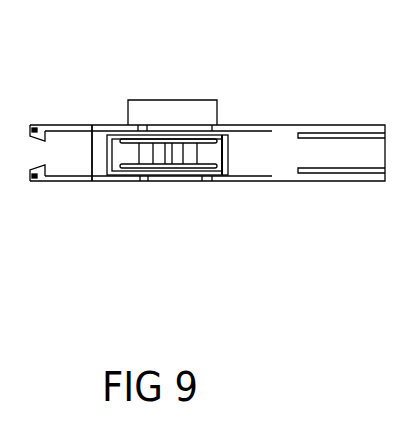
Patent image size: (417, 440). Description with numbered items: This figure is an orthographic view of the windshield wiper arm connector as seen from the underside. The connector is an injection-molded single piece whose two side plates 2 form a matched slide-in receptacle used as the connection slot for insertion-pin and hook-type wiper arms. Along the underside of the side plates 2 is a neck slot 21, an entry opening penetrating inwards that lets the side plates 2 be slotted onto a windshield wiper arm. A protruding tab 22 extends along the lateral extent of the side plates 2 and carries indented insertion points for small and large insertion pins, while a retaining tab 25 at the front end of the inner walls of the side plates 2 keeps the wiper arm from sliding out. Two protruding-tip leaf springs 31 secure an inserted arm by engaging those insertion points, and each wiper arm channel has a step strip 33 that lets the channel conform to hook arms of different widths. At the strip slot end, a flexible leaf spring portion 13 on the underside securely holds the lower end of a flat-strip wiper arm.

The side plates 2 is at (112, 126).
The flexible leaf spring portion 13 is at (362, 155).
The neck slot 21 is at (142, 126).
The protruding tab 22 is at (190, 112).
The retaining tab 25 is at (34, 128).
The protruding-tip leaf springs 31 is at (158, 153).
The step strip 33 is at (92, 126).